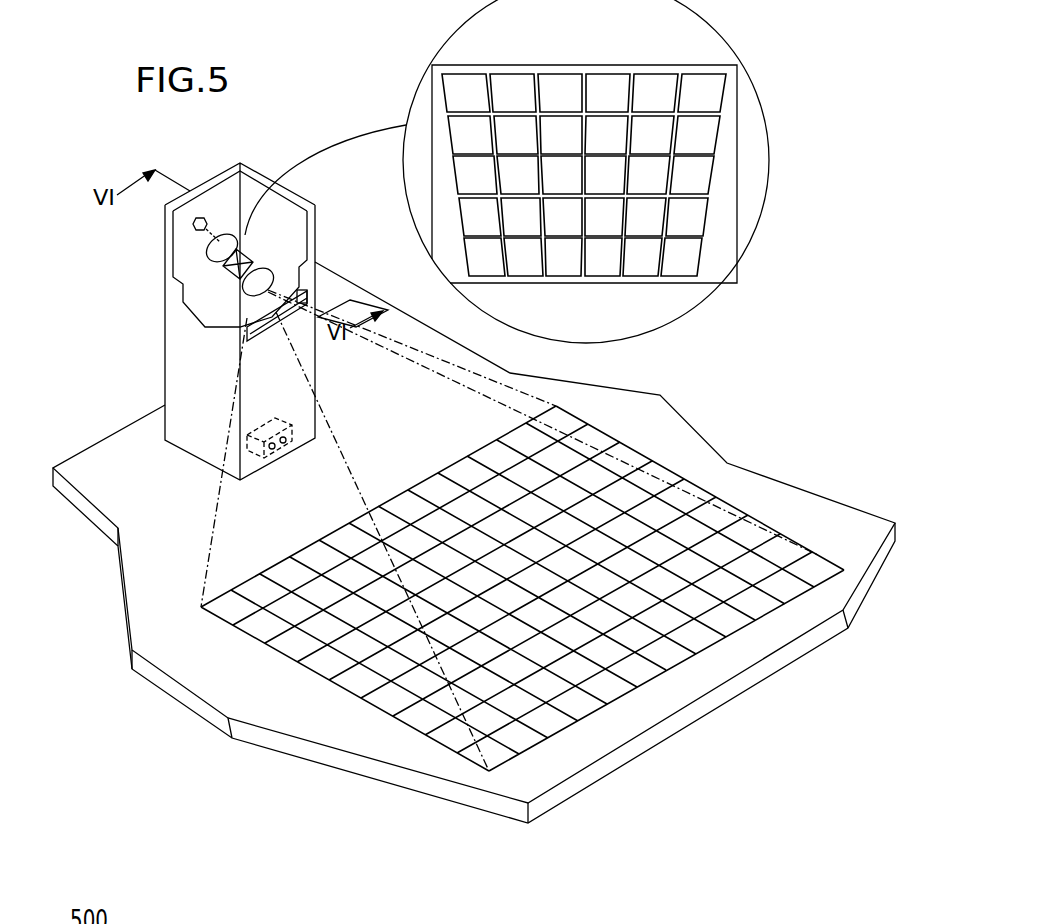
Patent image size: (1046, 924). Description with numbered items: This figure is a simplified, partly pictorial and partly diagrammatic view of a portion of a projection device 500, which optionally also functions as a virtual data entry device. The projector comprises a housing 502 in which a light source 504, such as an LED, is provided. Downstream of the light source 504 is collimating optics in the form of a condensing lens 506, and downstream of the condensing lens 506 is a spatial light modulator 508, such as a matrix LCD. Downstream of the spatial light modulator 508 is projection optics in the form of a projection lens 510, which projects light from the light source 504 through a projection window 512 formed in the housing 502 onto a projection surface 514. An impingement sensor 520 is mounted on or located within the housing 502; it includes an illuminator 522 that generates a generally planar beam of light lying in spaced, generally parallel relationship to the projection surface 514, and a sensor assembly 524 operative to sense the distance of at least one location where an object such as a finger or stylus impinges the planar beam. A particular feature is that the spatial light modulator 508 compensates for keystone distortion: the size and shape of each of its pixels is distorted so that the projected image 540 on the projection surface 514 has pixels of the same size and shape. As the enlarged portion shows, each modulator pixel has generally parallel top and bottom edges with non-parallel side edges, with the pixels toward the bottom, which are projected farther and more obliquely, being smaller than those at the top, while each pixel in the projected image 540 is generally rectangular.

The projection device 500 is at (100, 254).
The housing 502 is at (165, 366).
The light source 504 is at (205, 217).
The condensing lens 506 is at (234, 236).
The spatial light modulator 508 is at (183, 303).
The projection lens 510 is at (280, 276).
The projection window 512 is at (300, 295).
The projection surface 514 is at (152, 583).
The impingement sensor 520 is at (255, 426).
The illuminator 522 is at (283, 443).
The sensor assembly 524 is at (272, 449).
The projected image 540 is at (722, 521).